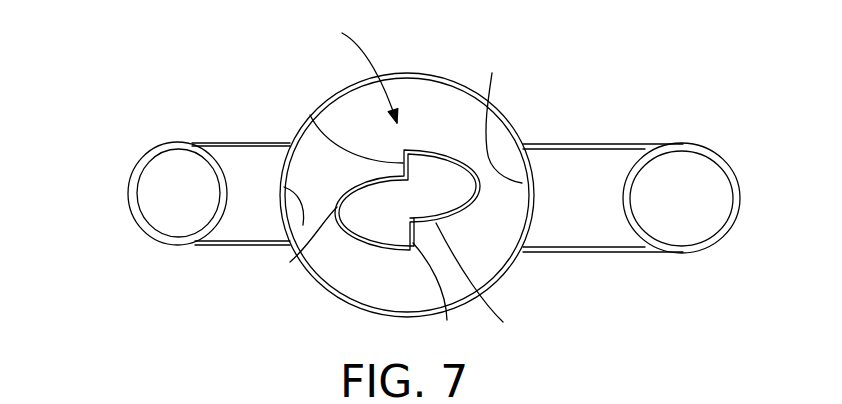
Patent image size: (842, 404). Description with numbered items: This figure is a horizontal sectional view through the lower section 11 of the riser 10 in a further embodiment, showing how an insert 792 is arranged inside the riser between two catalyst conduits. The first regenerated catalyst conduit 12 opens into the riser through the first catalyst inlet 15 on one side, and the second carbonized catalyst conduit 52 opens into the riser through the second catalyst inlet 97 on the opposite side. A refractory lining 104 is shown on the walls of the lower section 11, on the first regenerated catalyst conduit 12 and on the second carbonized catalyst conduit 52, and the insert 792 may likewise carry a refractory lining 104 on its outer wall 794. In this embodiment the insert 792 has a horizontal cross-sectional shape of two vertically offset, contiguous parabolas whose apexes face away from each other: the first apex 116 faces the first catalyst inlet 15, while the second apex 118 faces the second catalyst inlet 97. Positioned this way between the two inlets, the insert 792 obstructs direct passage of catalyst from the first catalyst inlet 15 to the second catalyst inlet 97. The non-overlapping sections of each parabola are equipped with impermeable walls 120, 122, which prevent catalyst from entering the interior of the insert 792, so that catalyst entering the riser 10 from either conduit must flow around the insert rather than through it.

The riser 10 is at (401, 182).
The lower section 11 is at (438, 82).
The first regenerated catalyst conduit 12 is at (213, 246).
The first catalyst inlet 15 is at (290, 262).
The second carbonized catalyst conduit 52 is at (620, 143).
The second catalyst inlet 97 is at (492, 73).
The refractory lining 104 is at (243, 144).
The first apex 116 is at (303, 225).
The second apex 118 is at (482, 188).
The impermeable wall 120 is at (318, 124).
The impermeable wall 122 is at (445, 297).
The insert 792 is at (340, 68).
The outer wall 794 is at (494, 278).